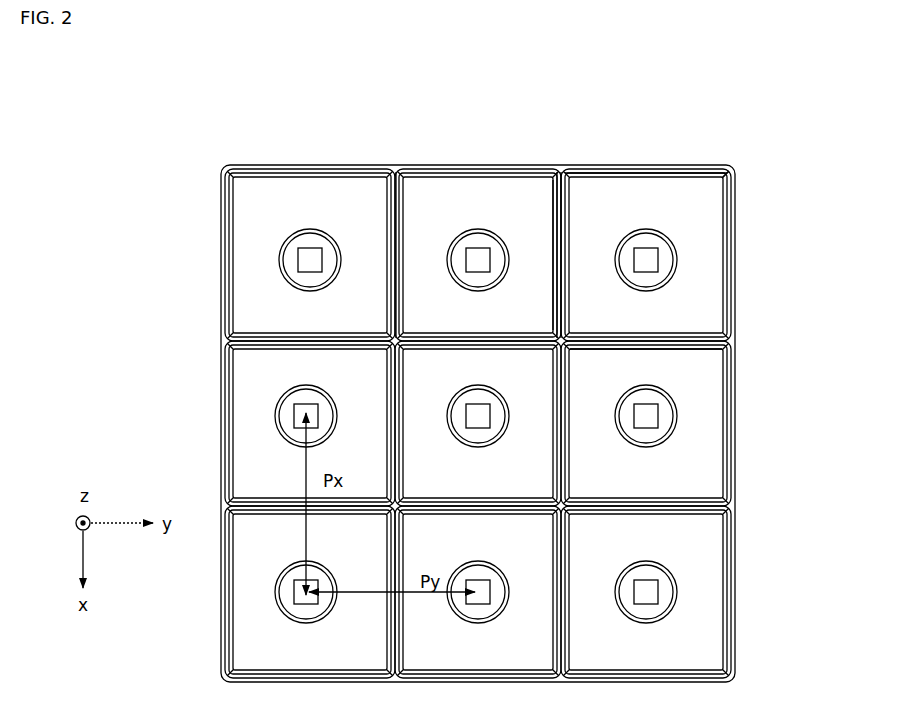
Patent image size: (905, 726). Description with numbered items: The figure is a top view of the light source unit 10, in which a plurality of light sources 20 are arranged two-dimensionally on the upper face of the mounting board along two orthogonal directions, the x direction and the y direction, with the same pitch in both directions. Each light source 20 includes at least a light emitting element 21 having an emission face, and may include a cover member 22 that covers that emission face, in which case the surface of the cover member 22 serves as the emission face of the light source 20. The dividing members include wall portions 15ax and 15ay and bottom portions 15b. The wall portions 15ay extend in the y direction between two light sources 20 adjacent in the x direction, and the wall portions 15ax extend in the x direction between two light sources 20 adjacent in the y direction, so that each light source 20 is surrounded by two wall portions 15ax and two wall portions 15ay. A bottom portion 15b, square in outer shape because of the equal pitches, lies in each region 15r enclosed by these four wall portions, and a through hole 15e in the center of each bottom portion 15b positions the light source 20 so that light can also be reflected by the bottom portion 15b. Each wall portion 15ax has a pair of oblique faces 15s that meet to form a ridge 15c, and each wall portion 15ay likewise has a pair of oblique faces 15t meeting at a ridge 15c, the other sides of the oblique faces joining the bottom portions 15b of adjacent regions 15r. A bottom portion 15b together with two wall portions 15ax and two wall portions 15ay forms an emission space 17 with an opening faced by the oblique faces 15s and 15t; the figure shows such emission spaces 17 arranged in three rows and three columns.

The light source unit 10 is at (800, 148).
The region 15r is at (454, 201).
The ridge 15c is at (545, 262).
The oblique faces 15s is at (560, 262).
The oblique faces 15t is at (680, 185).
The through hole 15e is at (653, 226).
The wall portion 15ax is at (540, 297).
The wall portion 15ay is at (670, 361).
The bottom portion 15b is at (646, 255).
The emission space 17 is at (478, 453).
The light source 20 is at (733, 243).
The light emitting element 21 is at (658, 257).
The cover member 22 is at (671, 237).